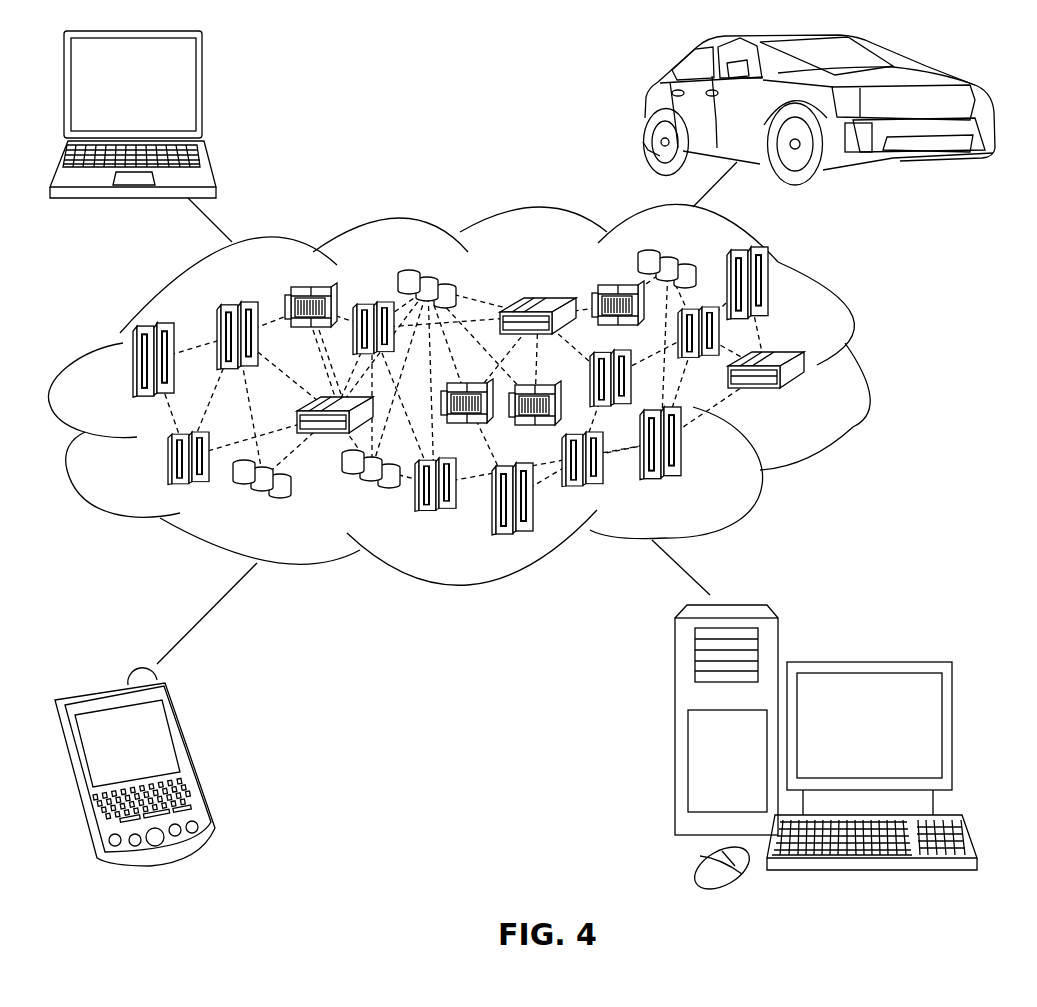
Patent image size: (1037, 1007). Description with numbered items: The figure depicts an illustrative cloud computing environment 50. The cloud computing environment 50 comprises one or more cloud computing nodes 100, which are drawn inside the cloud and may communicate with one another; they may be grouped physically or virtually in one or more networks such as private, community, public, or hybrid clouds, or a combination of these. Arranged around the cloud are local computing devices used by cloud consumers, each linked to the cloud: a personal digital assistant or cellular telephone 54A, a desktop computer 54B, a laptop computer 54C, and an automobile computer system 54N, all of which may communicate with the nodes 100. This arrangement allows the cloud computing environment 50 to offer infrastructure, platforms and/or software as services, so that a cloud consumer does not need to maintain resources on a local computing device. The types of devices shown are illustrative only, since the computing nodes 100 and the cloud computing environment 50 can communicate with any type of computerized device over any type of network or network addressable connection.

The cloud computing environment 50 is at (868, 368).
The cloud computing nodes 100 is at (808, 400).
The personal digital assistant (PDA) or cellular telephone 54A is at (195, 757).
The desktop computer 54B is at (867, 661).
The laptop computer 54C is at (202, 93).
The automobile computer system 54N is at (645, 108).